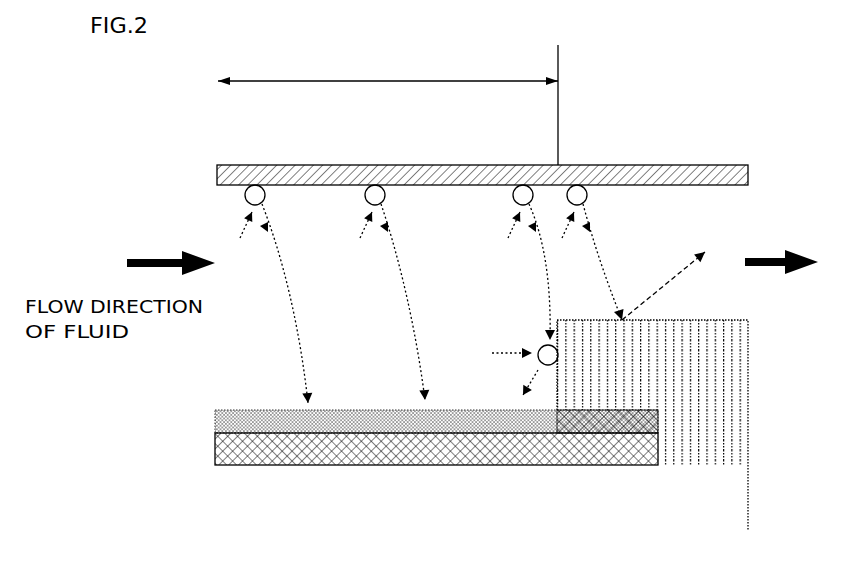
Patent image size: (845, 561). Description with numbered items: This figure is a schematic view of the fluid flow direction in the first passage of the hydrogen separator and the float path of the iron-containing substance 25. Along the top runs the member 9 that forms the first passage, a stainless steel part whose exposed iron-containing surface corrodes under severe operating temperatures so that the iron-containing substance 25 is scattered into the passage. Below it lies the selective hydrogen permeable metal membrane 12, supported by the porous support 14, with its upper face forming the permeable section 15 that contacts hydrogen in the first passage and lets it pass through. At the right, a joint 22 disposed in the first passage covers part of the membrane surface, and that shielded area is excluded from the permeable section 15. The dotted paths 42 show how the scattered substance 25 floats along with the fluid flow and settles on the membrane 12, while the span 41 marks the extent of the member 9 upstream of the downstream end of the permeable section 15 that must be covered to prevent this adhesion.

The member that forms the first passage 9 is at (659, 165).
The selective hydrogen permeable metal membrane 12 is at (585, 466).
The porous support 14 is at (268, 466).
The permeable section 15 is at (362, 425).
The joint 22 is at (713, 374).
The iron-containing substance 25 is at (258, 192).
The nozzle region length 41 is at (388, 105).
The fluid jets 42 is at (408, 288).